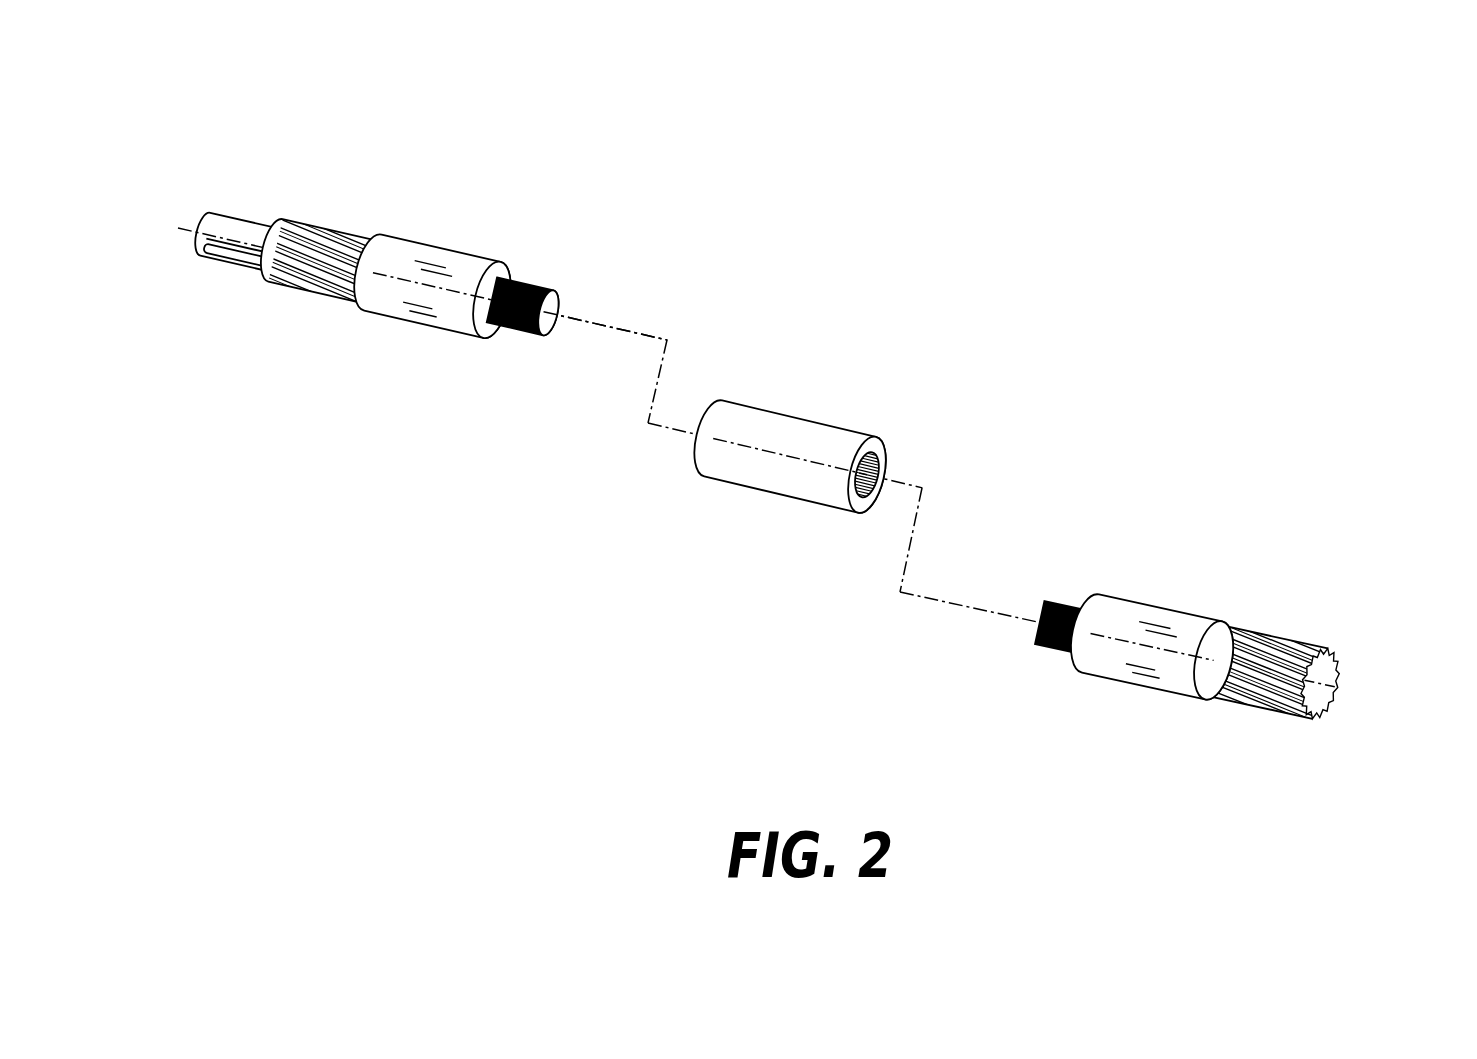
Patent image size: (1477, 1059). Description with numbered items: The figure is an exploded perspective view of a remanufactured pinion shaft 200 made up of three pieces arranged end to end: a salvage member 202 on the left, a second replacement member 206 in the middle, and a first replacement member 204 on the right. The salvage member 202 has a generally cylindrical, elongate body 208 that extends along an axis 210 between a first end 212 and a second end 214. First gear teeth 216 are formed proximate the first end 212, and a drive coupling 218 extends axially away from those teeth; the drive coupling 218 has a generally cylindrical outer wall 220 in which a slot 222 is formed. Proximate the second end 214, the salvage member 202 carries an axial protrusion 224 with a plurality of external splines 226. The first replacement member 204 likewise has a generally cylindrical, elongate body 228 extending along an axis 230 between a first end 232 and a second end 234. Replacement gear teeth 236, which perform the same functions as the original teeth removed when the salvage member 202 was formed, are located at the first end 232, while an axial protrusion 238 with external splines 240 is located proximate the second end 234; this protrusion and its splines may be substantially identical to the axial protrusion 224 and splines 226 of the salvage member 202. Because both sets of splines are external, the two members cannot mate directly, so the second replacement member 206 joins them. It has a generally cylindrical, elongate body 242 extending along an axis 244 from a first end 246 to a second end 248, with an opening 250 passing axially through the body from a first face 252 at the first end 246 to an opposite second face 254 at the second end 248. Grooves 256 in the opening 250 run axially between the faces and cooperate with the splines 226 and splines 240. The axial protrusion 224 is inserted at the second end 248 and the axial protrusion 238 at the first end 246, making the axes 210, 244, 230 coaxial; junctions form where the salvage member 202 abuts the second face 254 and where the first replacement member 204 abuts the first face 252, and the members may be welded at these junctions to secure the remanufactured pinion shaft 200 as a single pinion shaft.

The remanufactured pinion shaft 200 is at (1056, 113).
The salvage member 202 is at (246, 467).
The first replacement member 204 is at (1334, 546).
The second replacement member 206 is at (716, 589).
The elongate body 208 is at (418, 252).
The axis 210 is at (186, 227).
The first end 212 is at (194, 175).
The second end 214 is at (594, 251).
The first gear teeth 216 is at (340, 248).
The drive coupling 218 is at (208, 302).
The outer wall 220 is at (232, 233).
The slot 222 is at (220, 256).
The axial protrusion 224 is at (542, 330).
The splines 226 is at (515, 327).
The elongate body 228 is at (1125, 617).
The axis 230 is at (1018, 618).
The first end 232 is at (1363, 666).
The second end 234 is at (1061, 566).
The replacement gear teeth 236 is at (1292, 653).
The axial protrusion 238 is at (1075, 677).
The splines 240 is at (1055, 642).
The elongate body 242 is at (783, 435).
The axis 244 is at (672, 428).
The first end 246 is at (898, 426).
The second end 248 is at (731, 387).
The opening 250 is at (886, 472).
The first face 252 is at (862, 510).
The second face 254 is at (700, 470).
The grooves 256 is at (876, 495).